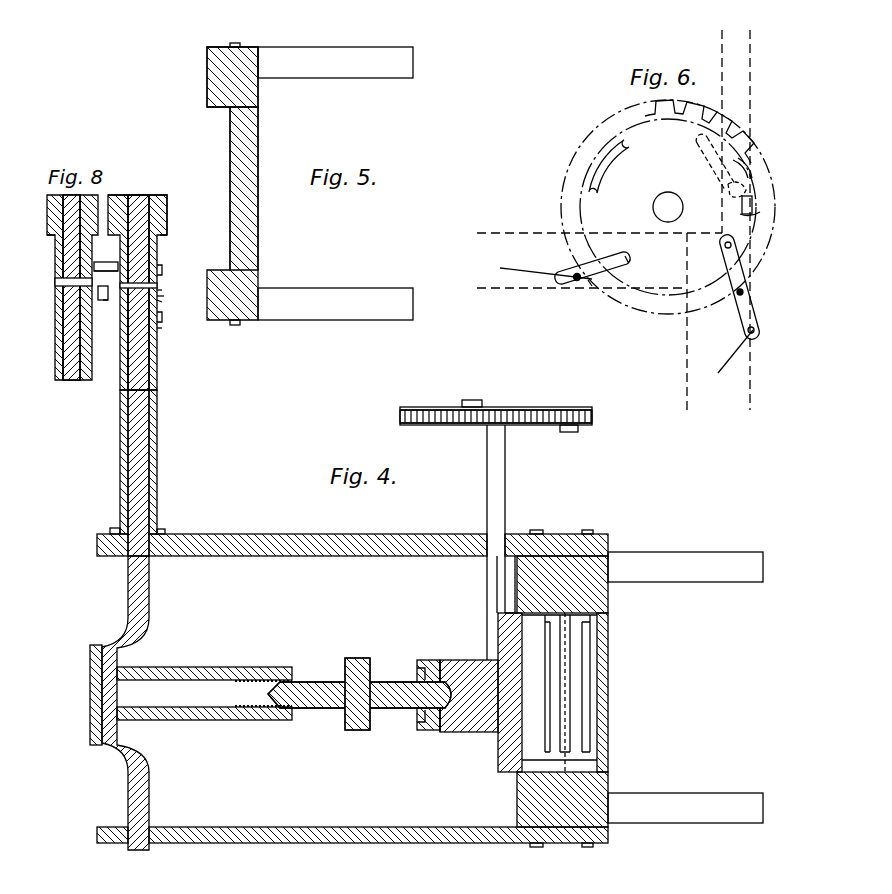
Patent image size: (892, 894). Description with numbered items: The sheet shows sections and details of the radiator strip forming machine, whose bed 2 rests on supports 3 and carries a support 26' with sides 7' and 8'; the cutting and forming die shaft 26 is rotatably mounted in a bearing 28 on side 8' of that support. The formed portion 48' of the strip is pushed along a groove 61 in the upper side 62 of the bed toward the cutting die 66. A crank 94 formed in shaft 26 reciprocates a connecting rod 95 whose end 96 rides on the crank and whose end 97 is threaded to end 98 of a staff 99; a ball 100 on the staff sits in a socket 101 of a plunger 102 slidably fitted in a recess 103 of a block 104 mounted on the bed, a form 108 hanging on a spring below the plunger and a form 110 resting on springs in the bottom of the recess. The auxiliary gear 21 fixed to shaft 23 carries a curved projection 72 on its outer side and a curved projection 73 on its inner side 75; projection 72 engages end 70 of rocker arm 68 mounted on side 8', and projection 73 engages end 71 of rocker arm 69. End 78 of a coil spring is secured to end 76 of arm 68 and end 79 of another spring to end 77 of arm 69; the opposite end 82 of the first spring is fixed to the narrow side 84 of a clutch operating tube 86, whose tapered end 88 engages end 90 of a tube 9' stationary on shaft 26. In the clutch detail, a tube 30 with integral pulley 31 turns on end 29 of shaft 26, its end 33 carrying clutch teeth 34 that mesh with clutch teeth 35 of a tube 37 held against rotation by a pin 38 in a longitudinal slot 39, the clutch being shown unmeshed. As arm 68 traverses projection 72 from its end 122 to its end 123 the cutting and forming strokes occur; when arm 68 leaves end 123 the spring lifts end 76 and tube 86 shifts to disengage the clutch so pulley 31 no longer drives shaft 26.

In FIG. 5, the bed 2 is at (258, 104).
In FIG. 5, the groove 61 is at (228, 116).
In FIG. 5, the upper side of the bed 62 is at (207, 80).
In FIG. 6, the curved projection 73 is at (592, 170).
In FIG. 4, the curved projection 73 is at (568, 432).
In FIG. 6, the end of projection 123 is at (700, 143).
In FIG. 6, the curved projection 72 is at (742, 168).
In FIG. 4, the curved projection 72 is at (470, 400).
In FIG. 6, the end of projection 122 is at (752, 197).
In FIG. 6, the inner side of gear 75 is at (758, 213).
In FIG. 6, the rocker arm 68 is at (762, 303).
In FIG. 6, the end of rocker arm 70 is at (740, 247).
In FIG. 6, the end of rocker arm 76 is at (759, 329).
In FIG. 6, the end of coil spring 78 is at (750, 335).
In FIG. 6, the end of rocker arm 77 is at (563, 283).
In FIG. 6, the end of coil spring 79 is at (546, 275).
In FIG. 6, the rocker arm 69 is at (590, 283).
In FIG. 6, the end of rocker arm 71 is at (628, 262).
In FIG. 8, the cutting and forming die shaft 26 is at (57, 287).
In FIG. 8, the pulley 31 is at (110, 195).
In FIG. 8, the end of shaft 29 is at (136, 195).
In FIG. 8, the tube 30 is at (55, 238).
In FIG. 8, the slot 39 is at (162, 272).
In FIG. 8, the clutch teeth 35 is at (56, 280).
In FIG. 8, the end of tube 33 is at (106, 255).
In FIG. 8, the clutch teeth 34 is at (106, 286).
In FIG. 8, the tube 37 is at (110, 300).
In FIG. 8, the clutch operating tube 86 is at (105, 303).
In FIG. 8, the pin 38 is at (160, 285).
In FIG. 8, the narrow side of clutch operating tube 84 is at (166, 295).
In FIG. 8, the end of coil spring 82 is at (176, 290).
In FIG. 8, the tapered end 88 is at (162, 302).
In FIG. 8, the end of tube 90 is at (160, 334).
In FIG. 4, the tube 9' is at (147, 466).
In FIG. 4, the crank 94 is at (110, 646).
In FIG. 4, the side of support 8' is at (352, 527).
In FIG. 4, the bearing 28 is at (162, 532).
In FIG. 4, the support 26' is at (406, 509).
In FIG. 4, the side of support 7' is at (352, 846).
In FIG. 4, the auxiliary gear 21 is at (548, 407).
In FIG. 4, the shaft 23 is at (505, 481).
In FIG. 4, the supports 3 is at (705, 822).
In FIG. 4, the form 110 is at (598, 644).
In FIG. 4, the block 104 is at (598, 786).
In FIG. 4, the cutting die 66 is at (488, 658).
In FIG. 4, the form 108 is at (548, 679).
In FIG. 4, the formed portion of strip 48' is at (610, 692).
In FIG. 4, the recess 103 is at (520, 770).
In FIG. 4, the ball 100 is at (425, 710).
In FIG. 4, the socket 101 is at (435, 735).
In FIG. 4, the plunger 102 is at (470, 735).
In FIG. 4, the end of staff 98 is at (302, 681).
In FIG. 4, the staff 99 is at (343, 709).
In FIG. 4, the connecting rod 95 is at (200, 667).
In FIG. 4, the end of connecting rod 97 is at (286, 672).
In FIG. 4, the end of connecting rod 96 is at (90, 691).